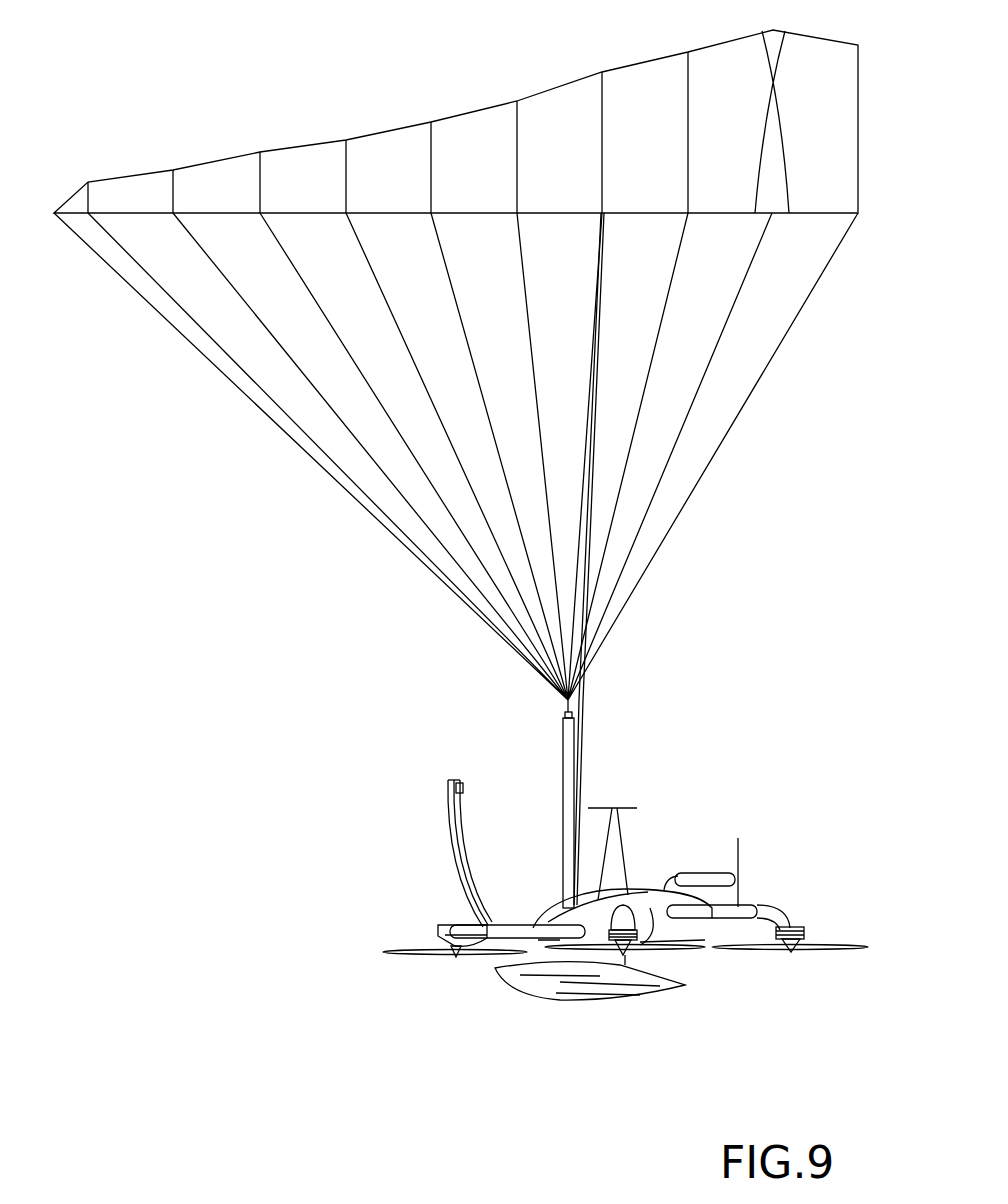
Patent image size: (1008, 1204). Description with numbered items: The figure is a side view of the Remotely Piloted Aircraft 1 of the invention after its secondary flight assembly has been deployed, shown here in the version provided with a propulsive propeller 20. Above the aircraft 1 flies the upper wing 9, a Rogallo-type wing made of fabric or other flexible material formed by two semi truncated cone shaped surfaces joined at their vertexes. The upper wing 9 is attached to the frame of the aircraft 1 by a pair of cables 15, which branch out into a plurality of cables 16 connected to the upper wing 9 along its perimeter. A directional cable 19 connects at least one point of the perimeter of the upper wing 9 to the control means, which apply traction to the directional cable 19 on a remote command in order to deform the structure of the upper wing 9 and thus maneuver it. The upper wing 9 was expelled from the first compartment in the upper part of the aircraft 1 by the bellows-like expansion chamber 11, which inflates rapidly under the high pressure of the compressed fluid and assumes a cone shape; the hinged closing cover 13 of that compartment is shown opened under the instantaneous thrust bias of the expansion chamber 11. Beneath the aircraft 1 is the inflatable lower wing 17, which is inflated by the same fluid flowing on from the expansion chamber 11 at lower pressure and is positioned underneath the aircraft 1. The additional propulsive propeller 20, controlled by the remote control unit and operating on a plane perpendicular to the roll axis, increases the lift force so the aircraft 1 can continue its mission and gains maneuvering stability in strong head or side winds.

The upper wing 9 is at (412, 118).
The cables 16 is at (783, 342).
The directional cable 19 is at (585, 723).
The pair of cables 15 is at (567, 742).
The Remotely Piloted Aircraft 1 is at (802, 890).
The closing cover 13 is at (445, 832).
The expansion chamber 11 is at (628, 857).
The propulsive propeller 20 is at (741, 855).
The lower wing 17 is at (522, 985).